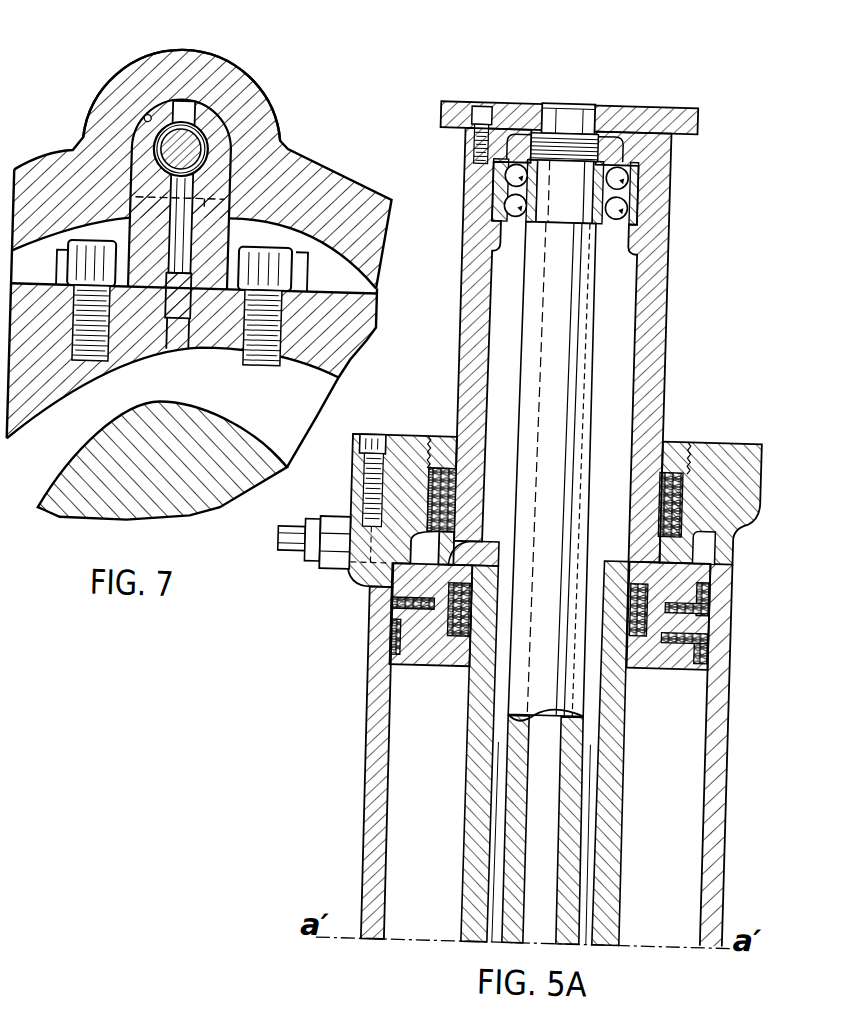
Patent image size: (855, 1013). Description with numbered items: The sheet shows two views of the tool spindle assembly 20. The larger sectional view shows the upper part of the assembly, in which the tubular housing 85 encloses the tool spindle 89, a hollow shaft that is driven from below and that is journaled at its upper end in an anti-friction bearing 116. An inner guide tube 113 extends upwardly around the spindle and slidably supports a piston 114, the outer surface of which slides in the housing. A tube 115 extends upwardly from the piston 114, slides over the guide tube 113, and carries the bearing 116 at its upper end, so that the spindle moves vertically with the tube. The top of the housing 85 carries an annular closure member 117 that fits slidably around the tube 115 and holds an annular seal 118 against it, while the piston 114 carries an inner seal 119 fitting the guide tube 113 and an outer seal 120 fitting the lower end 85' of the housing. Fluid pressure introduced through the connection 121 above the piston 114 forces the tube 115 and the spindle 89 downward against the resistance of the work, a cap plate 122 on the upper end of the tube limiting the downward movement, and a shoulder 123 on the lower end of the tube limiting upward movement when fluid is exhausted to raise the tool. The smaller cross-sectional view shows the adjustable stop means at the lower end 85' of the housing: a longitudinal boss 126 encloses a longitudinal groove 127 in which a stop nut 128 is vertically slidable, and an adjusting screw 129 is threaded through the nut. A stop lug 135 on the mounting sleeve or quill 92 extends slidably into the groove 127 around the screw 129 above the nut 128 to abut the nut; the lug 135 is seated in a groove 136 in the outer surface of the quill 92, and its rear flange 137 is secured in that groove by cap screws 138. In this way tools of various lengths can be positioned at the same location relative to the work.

In FIG. 5A, the tool spindle assembly 20 is at (372, 747).
In FIG. 5A, the tubular housing 85 is at (528, 750).
In FIG. 7, the lower end of housing 85' is at (201, 247).
In FIG. 7, the tool spindle 89 is at (99, 526).
In FIG. 5A, the tool spindle 89 is at (540, 361).
In FIG. 7, the mounting sleeve or quill 92 is at (42, 392).
In FIG. 5A, the inner guide tube 113 is at (488, 826).
In FIG. 5A, the piston 114 is at (427, 668).
In FIG. 5A, the tube 115 is at (461, 300).
In FIG. 5A, the anti-friction bearing 116 is at (491, 186).
In FIG. 5A, the annular closure member 117 is at (401, 447).
In FIG. 5A, the annular seal 118 is at (440, 497).
In FIG. 5A, the inner seal 119 is at (464, 642).
In FIG. 5A, the outer seal 120 is at (705, 595).
In FIG. 5A, the connection 121 is at (300, 520).
In FIG. 5A, the cap plate 122 is at (430, 119).
In FIG. 5A, the shoulder 123 is at (484, 538).
In FIG. 7, the longitudinal boss 126 is at (143, 70).
In FIG. 7, the longitudinal groove 127 is at (137, 122).
In FIG. 7, the stop nut 128 is at (208, 226).
In FIG. 7, the adjusting screw 129 is at (147, 154).
In FIG. 7, the stop lug 135 is at (212, 153).
In FIG. 7, the groove 136 is at (295, 292).
In FIG. 7, the rear flange 137 is at (48, 270).
In FIG. 7, the cap screws 138 is at (78, 262).